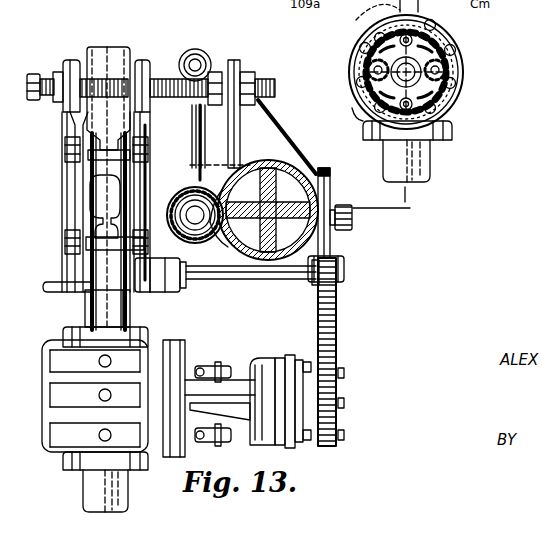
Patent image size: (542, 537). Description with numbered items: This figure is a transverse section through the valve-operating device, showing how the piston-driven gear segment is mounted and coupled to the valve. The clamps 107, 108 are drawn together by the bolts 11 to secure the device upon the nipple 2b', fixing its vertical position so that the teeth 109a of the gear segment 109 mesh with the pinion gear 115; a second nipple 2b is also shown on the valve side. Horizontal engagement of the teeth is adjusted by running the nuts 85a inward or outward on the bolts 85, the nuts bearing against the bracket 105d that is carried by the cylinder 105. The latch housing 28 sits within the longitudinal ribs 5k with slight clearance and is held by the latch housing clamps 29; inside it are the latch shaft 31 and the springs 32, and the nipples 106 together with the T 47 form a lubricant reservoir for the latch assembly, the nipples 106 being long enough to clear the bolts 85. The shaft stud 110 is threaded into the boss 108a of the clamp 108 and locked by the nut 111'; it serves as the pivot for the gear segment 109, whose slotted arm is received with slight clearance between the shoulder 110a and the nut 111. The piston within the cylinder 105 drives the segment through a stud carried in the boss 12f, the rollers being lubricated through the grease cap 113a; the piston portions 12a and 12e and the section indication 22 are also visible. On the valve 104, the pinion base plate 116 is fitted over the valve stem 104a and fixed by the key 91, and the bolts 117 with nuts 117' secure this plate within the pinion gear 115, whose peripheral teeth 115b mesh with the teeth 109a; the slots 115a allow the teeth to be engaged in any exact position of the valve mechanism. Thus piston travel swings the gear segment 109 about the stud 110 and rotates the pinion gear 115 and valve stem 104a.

The shaft 2b is at (277, 326).
The nipple 2b' is at (109, 85).
The longitudinal ribs 5k is at (213, 180).
The bolts 11 is at (62, 232).
The section line 12a is at (394, 203).
The disk 12e is at (252, 262).
The boss 12f is at (285, 203).
The section indicator 22 is at (398, 201).
The latch housing 28 is at (203, 182).
The latch housing clamps 29 is at (190, 188).
The latch shaft 31 is at (195, 224).
The springs 32 is at (200, 226).
The T 47 is at (201, 50).
The bolts 85 is at (45, 103).
The nuts 85a is at (248, 83).
The key 91 is at (398, 52).
The valve 104 is at (70, 433).
The valve stem 104a is at (372, 112).
The cylinder 105 is at (318, 240).
The bracket 105d is at (232, 123).
The nipples 106 is at (192, 128).
The clamp 107 is at (70, 73).
The clamp 108 is at (150, 50).
The boss 108a is at (146, 293).
The gear segment 109 is at (323, 198).
The teeth 109a is at (338, 308).
The shaft stud 110 is at (232, 280).
The shoulder 110a is at (316, 281).
The nut 111 is at (350, 269).
The nut 111' is at (160, 286).
The grease cap 113a is at (353, 220).
The pinion gear 115 is at (340, 416).
The slots 115a is at (452, 82).
The peripheral teeth 115b is at (448, 38).
The pinion base plate 116 is at (403, 77).
The bolts 117 is at (377, 69).
The nuts 117' is at (471, 72).